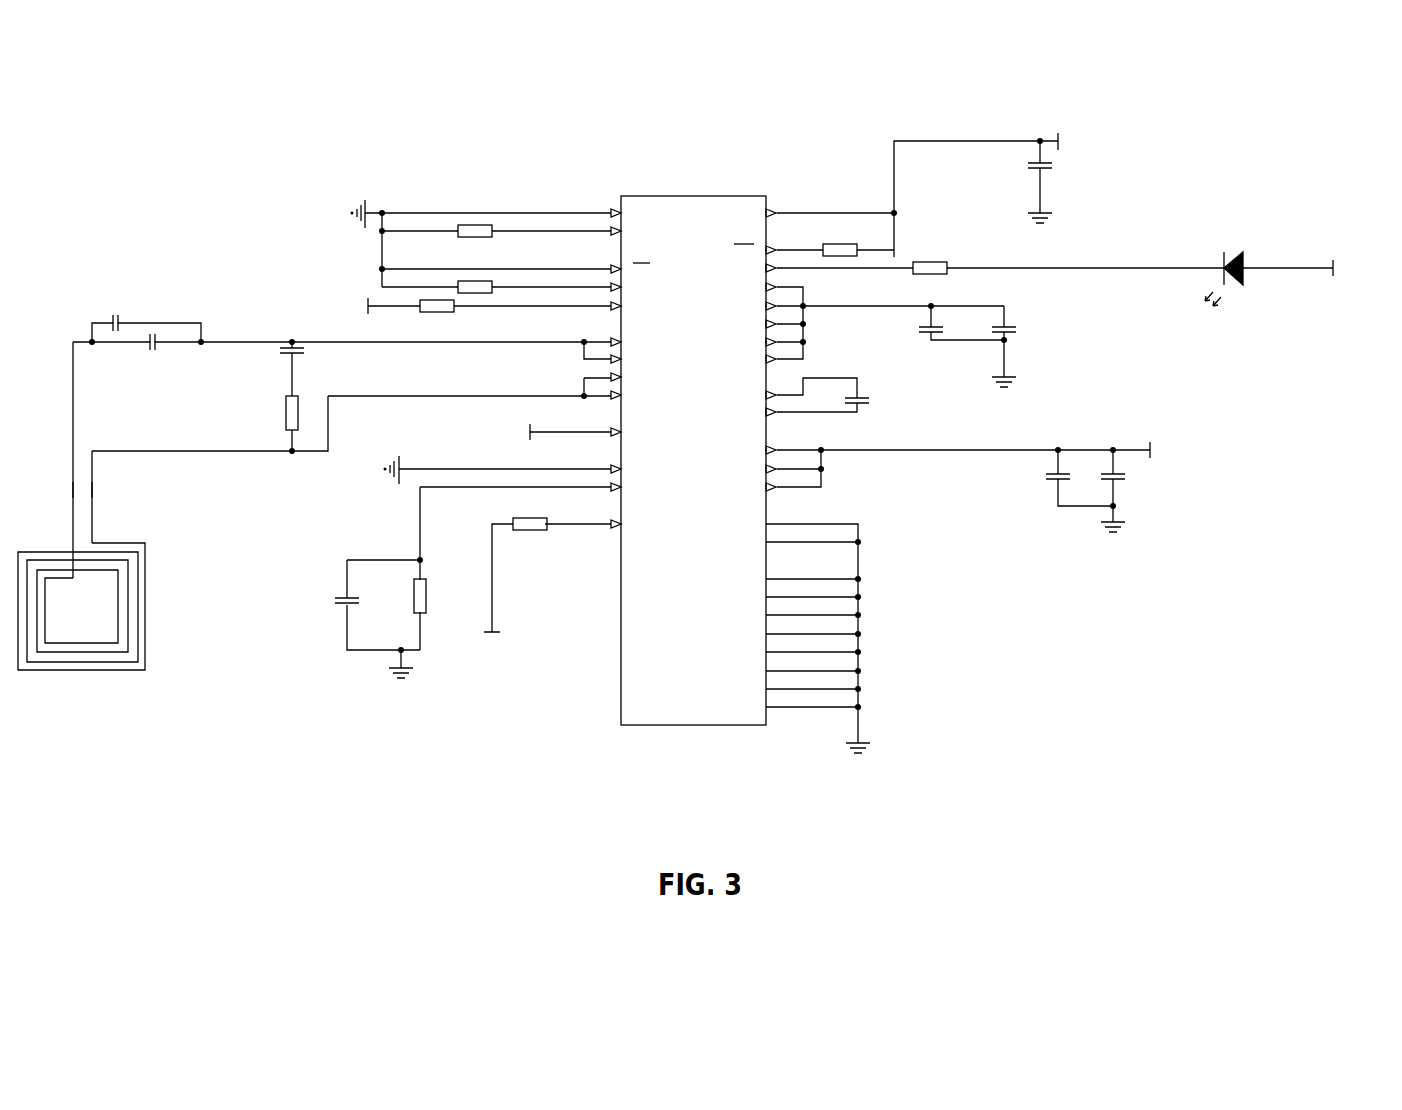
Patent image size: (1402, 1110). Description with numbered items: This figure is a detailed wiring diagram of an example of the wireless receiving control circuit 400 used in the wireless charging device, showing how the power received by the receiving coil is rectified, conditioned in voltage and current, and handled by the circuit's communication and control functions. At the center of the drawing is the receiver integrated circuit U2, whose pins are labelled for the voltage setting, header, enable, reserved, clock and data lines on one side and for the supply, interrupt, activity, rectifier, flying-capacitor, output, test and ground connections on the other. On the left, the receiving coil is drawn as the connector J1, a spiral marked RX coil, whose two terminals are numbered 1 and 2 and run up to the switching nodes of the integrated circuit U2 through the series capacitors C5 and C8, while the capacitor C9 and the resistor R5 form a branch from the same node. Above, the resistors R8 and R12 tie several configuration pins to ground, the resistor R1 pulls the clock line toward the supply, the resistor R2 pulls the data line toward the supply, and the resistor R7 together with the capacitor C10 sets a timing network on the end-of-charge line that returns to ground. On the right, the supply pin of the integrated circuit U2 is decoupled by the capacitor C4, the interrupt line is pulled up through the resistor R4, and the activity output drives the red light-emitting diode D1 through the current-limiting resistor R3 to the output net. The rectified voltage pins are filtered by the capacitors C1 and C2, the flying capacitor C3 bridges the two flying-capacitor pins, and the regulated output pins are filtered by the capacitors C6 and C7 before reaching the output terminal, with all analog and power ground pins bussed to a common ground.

The wireless receiving control circuit 400 is at (477, 163).
The wireless power receiver IC P9027LP-RAWGI8 U2 is at (694, 462).
The RX coil J1 is at (81, 594).
The RX coil pin 1 is at (85, 490).
The RX coil pin 2 is at (65, 490).
The capacitor C5 is at (115, 330).
The capacitor C8 is at (157, 339).
The capacitor C9 1800pF C9 is at (309, 360).
The resistor R5 is at (301, 414).
The resistor R8 1.13k R8 is at (482, 233).
The resistor R12 1.60k R12 is at (489, 288).
The resistor R1 5.1k R1 is at (441, 308).
The resistor R7 10M R7 is at (433, 596).
The capacitor C10 1uF C10 is at (361, 614).
The resistor R2 5.1k R2 is at (530, 523).
The capacitor C4 10uF C4 is at (1053, 179).
The resistor R4 5.1k R4 is at (844, 253).
The resistor R3 680 R3 is at (932, 270).
The red LED D1 is at (1247, 271).
The capacitor C1 10uF C1 is at (944, 342).
The capacitor C2 10uF C2 is at (1017, 342).
The capacitor C3 0.047uF C3 is at (878, 415).
The capacitor C6 10uF C6 is at (1071, 489).
The capacitor C7 10uF C7 is at (1126, 489).